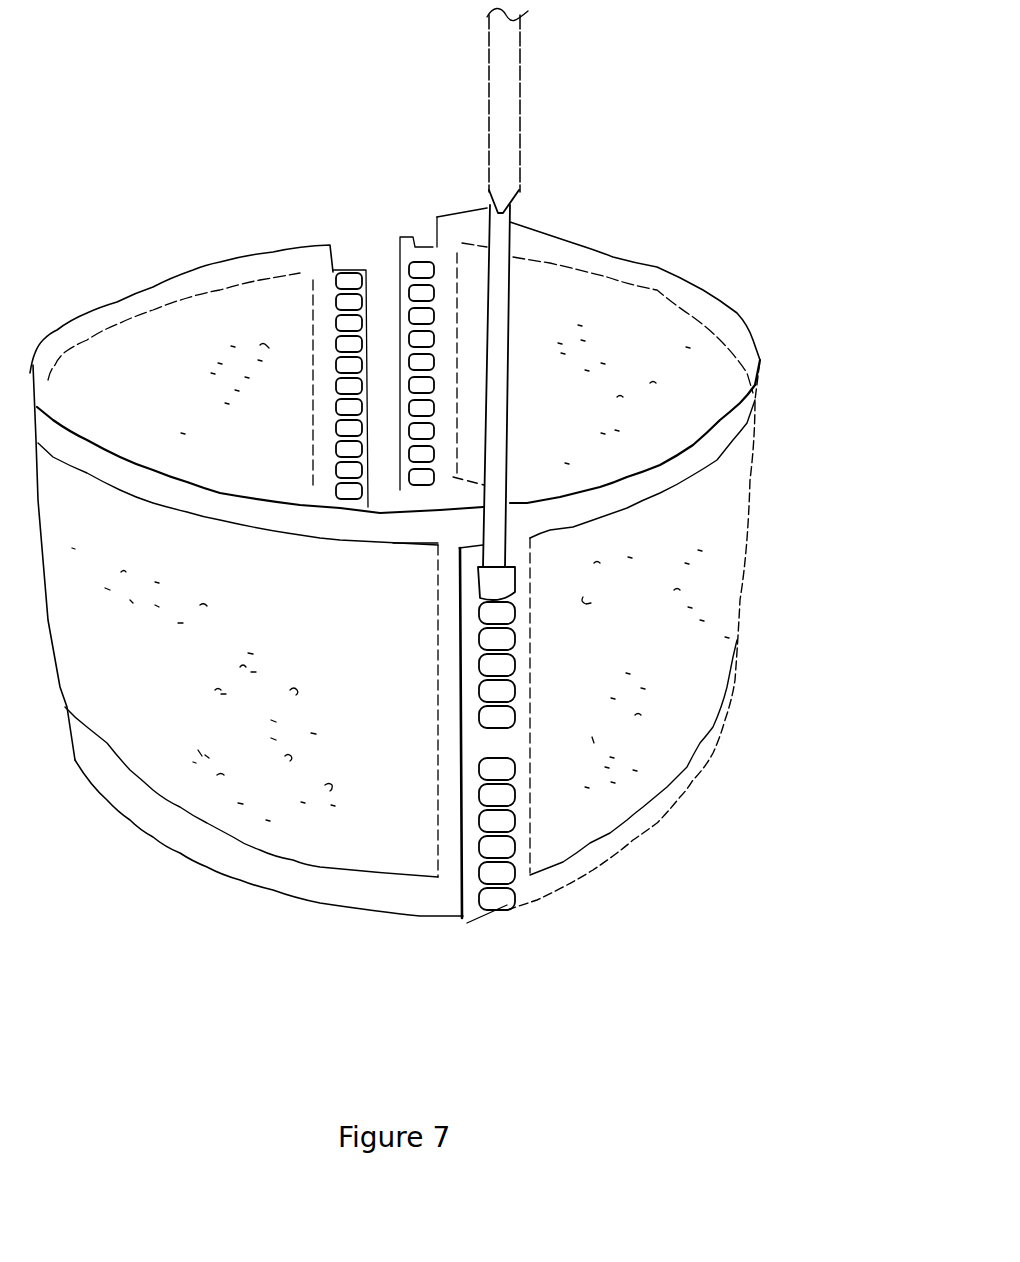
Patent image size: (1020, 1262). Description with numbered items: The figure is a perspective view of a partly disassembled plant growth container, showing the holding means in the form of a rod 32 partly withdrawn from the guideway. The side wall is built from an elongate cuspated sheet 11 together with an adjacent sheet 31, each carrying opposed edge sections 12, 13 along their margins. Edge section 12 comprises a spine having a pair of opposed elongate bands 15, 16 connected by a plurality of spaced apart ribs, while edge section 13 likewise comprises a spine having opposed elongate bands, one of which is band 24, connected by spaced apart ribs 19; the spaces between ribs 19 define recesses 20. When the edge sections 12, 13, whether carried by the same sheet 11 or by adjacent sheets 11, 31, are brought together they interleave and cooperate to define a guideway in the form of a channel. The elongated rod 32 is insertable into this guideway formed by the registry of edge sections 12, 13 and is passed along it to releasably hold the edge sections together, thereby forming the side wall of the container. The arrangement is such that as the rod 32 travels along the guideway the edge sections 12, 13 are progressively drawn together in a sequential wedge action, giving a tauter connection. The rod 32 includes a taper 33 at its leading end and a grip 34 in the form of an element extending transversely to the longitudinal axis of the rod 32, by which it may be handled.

The cuspated sheet 11 is at (120, 323).
The edge section 12 is at (345, 247).
The edge section 13 is at (436, 198).
The elongate band 15 is at (465, 579).
The elongate band 16 is at (518, 806).
The ribs 19 is at (478, 690).
The recesses 20 is at (478, 752).
The elongate band 24 is at (458, 622).
The adjacent sheet 31 is at (760, 358).
The rod 32 is at (500, 318).
The taper 33 is at (510, 212).
The grip 34 is at (505, 42).